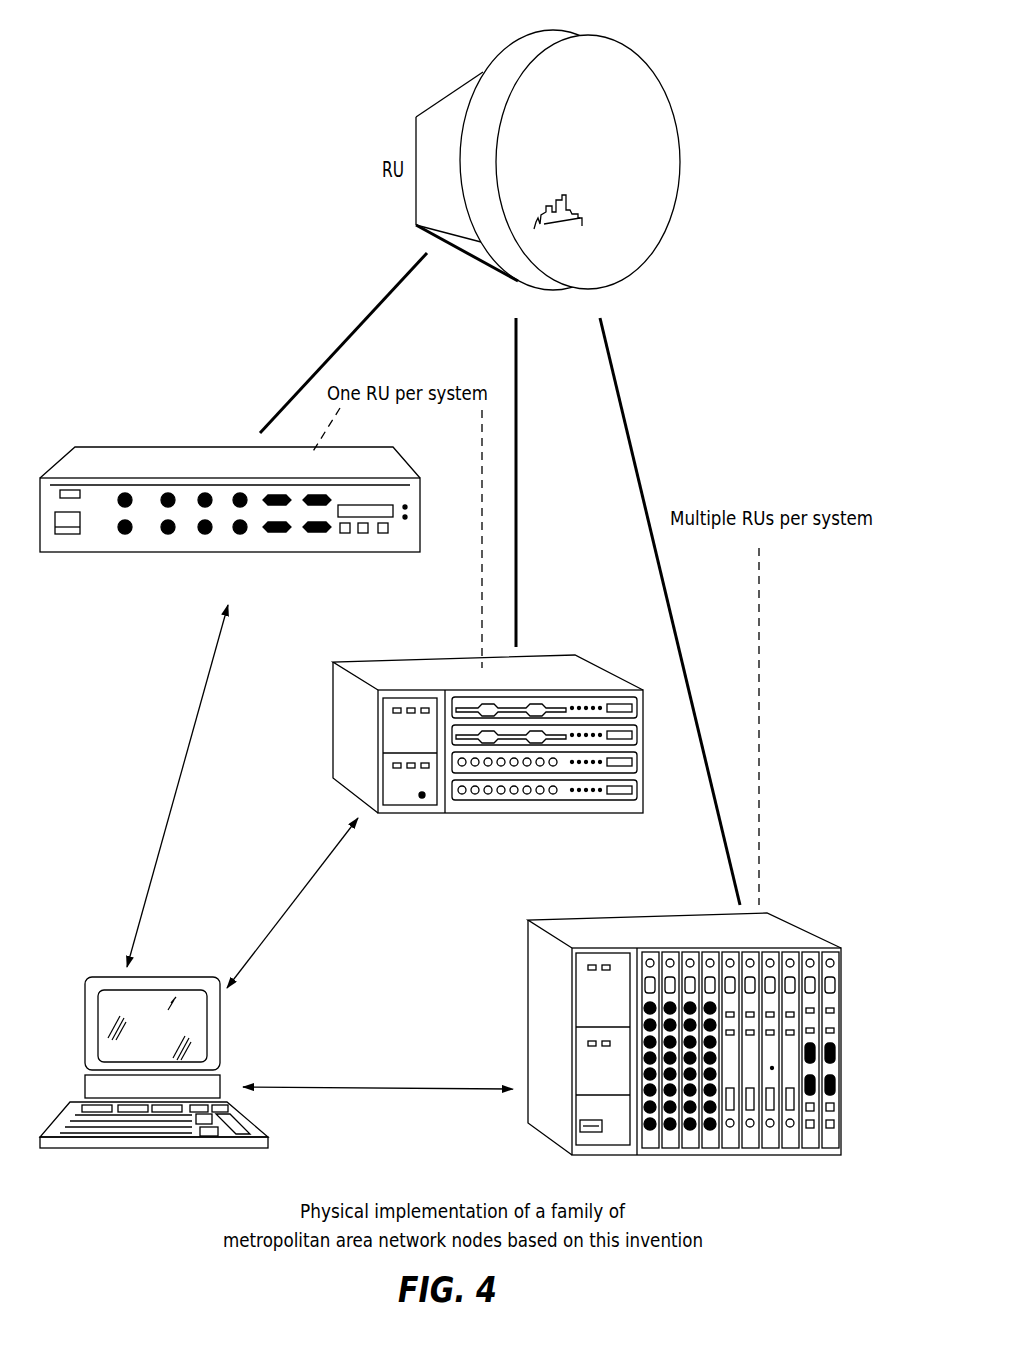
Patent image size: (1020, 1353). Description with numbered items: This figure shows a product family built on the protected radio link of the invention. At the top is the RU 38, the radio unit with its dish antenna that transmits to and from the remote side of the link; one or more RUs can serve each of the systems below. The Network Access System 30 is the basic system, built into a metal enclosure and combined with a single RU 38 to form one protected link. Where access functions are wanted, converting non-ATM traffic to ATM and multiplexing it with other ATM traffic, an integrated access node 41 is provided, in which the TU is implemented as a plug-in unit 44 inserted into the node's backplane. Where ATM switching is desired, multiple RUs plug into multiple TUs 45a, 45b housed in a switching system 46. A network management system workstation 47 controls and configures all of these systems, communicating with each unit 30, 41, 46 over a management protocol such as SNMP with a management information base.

The RU 38 is at (443, 103).
The Network Access System 30 is at (173, 455).
The integrated access node 41 is at (459, 742).
The plug-in unit 44 is at (596, 702).
The switching system 46 is at (686, 1051).
The TU 45a is at (793, 1003).
The TU 45b is at (772, 1048).
The network management system workstation 47 is at (112, 995).